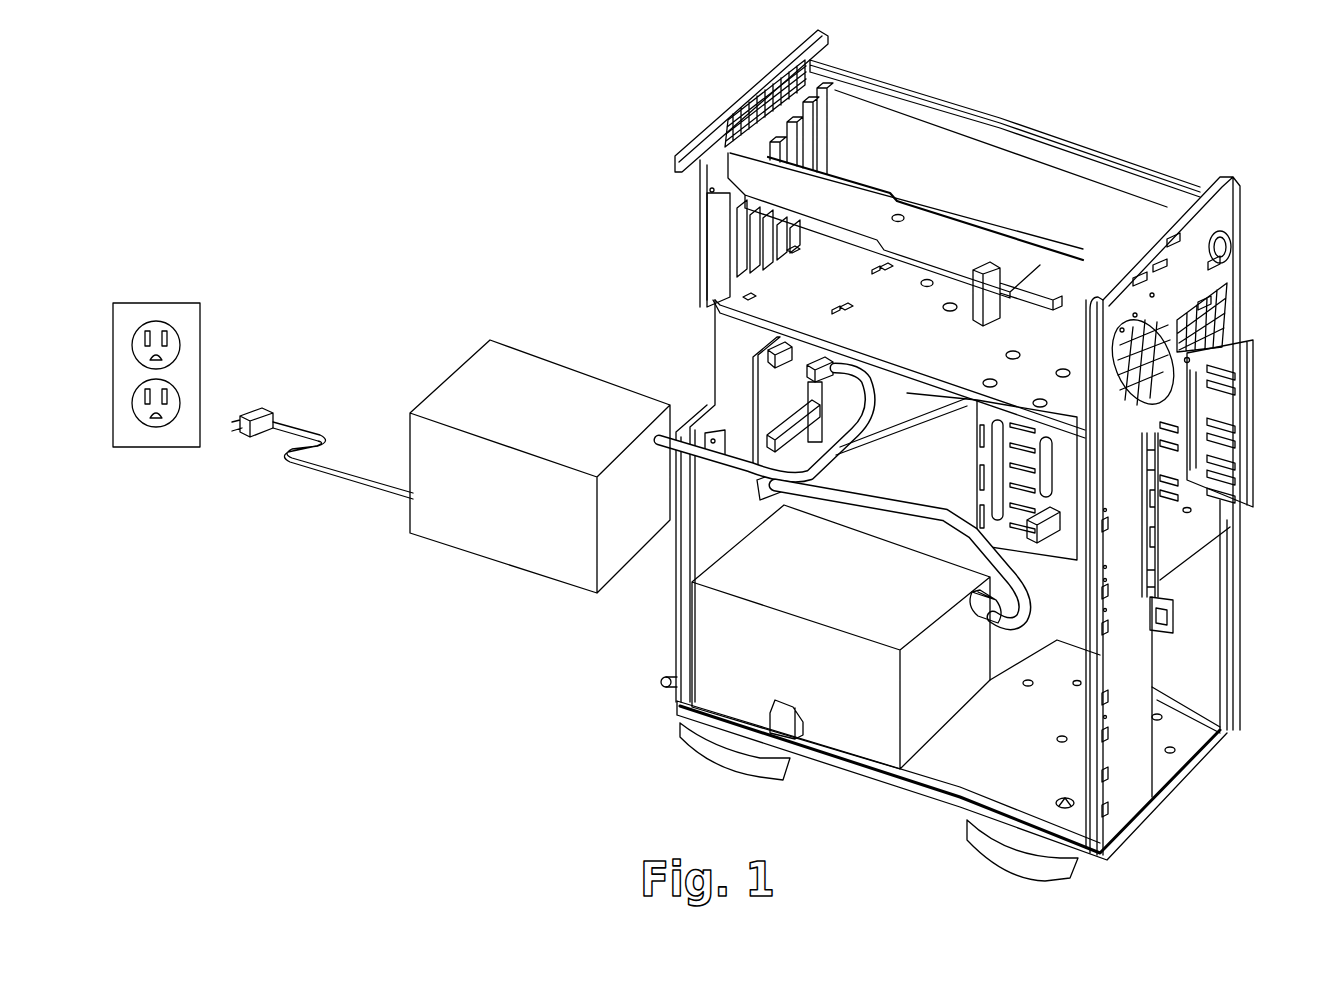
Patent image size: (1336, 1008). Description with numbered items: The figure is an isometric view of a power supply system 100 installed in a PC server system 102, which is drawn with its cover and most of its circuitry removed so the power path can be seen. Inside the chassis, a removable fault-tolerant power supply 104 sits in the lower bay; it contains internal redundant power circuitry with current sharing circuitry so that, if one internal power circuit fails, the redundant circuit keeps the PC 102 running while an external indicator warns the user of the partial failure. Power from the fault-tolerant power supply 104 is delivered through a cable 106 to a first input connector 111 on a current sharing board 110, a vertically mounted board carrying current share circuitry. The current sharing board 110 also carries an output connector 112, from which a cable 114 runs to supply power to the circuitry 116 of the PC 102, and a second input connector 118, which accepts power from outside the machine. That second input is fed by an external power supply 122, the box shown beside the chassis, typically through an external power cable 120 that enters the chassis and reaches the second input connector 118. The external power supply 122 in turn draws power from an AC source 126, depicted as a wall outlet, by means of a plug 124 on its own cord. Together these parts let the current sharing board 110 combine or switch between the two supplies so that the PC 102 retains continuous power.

The power supply system 100 is at (600, 190).
The PC server system 102 is at (985, 110).
The fault-tolerant power supply 104 is at (800, 666).
The cable 106 is at (897, 500).
The current sharing board 110 is at (750, 367).
The first input connector 111 is at (767, 503).
The output connector 112 is at (783, 415).
The cable 114 is at (913, 418).
The circuitry 116 is at (1243, 430).
The second input connector 118 is at (793, 353).
The external power cable 120 is at (738, 467).
The external power supply 122 is at (447, 548).
The plug 124 is at (340, 472).
The AC source 126 is at (160, 305).